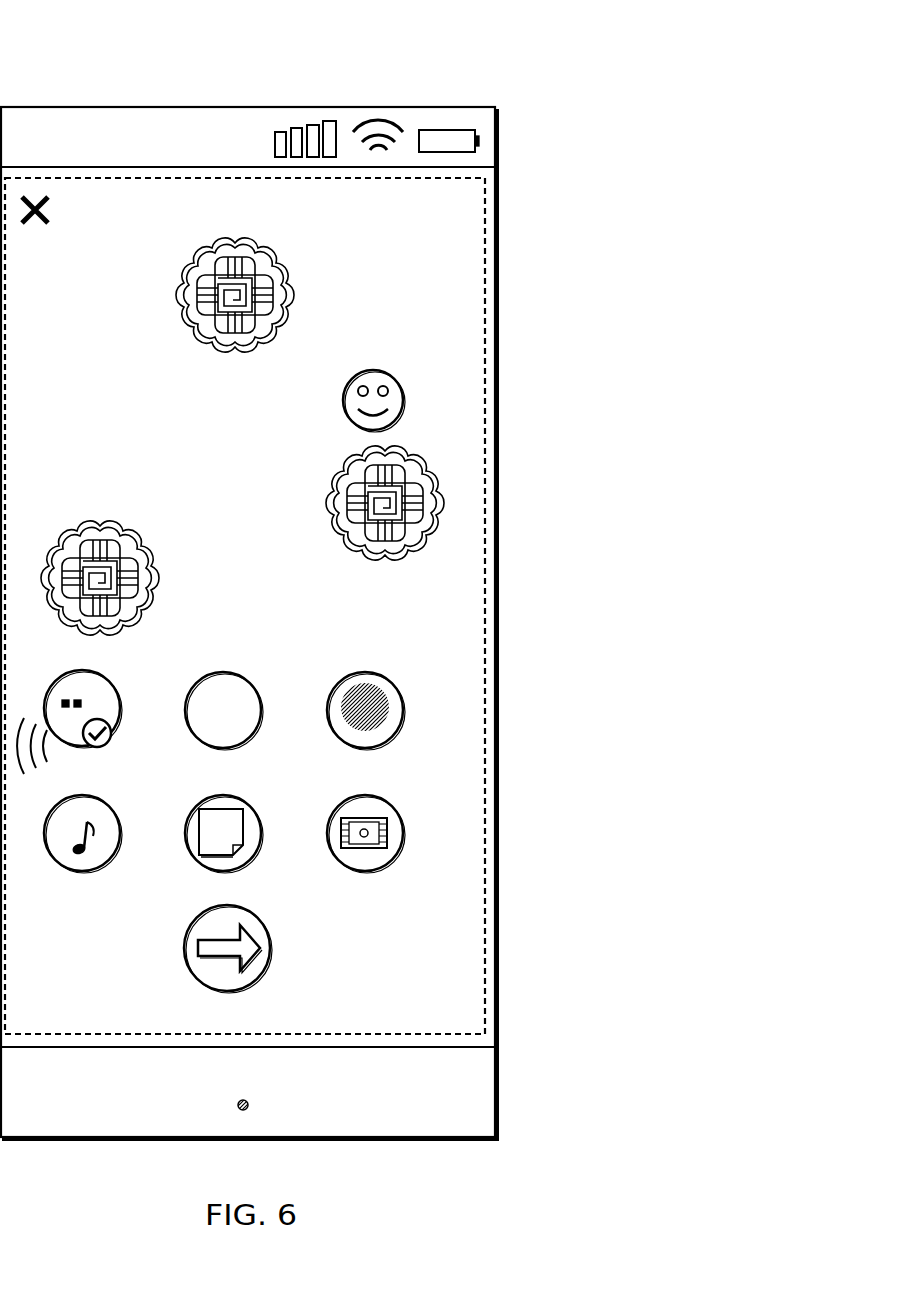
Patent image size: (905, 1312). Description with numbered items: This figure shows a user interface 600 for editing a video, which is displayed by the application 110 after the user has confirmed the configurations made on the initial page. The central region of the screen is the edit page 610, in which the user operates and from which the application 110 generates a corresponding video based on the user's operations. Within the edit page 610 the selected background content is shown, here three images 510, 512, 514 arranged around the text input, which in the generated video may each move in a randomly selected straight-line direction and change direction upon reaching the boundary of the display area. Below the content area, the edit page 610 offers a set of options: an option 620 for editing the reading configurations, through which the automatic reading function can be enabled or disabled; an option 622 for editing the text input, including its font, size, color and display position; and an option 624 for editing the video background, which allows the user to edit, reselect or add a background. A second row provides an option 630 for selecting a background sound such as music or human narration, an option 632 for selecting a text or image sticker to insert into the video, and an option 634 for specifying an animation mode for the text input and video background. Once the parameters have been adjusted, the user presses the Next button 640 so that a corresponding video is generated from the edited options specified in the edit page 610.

The user interface 600 is at (112, 34).
The application 110 is at (311, 107).
The edit page 610 is at (485, 245).
The image 510 is at (233, 240).
The image 512 is at (95, 522).
The image 514 is at (380, 448).
The option for editing the reading configurations 620 is at (113, 683).
The option for editing the text input 622 is at (255, 684).
The option for editing the video background 624 is at (402, 684).
The option for selecting a background sound 630 is at (113, 808).
The option for selecting a sticker 632 is at (255, 809).
The animation button 634 is at (402, 809).
The Next button 640 is at (257, 918).